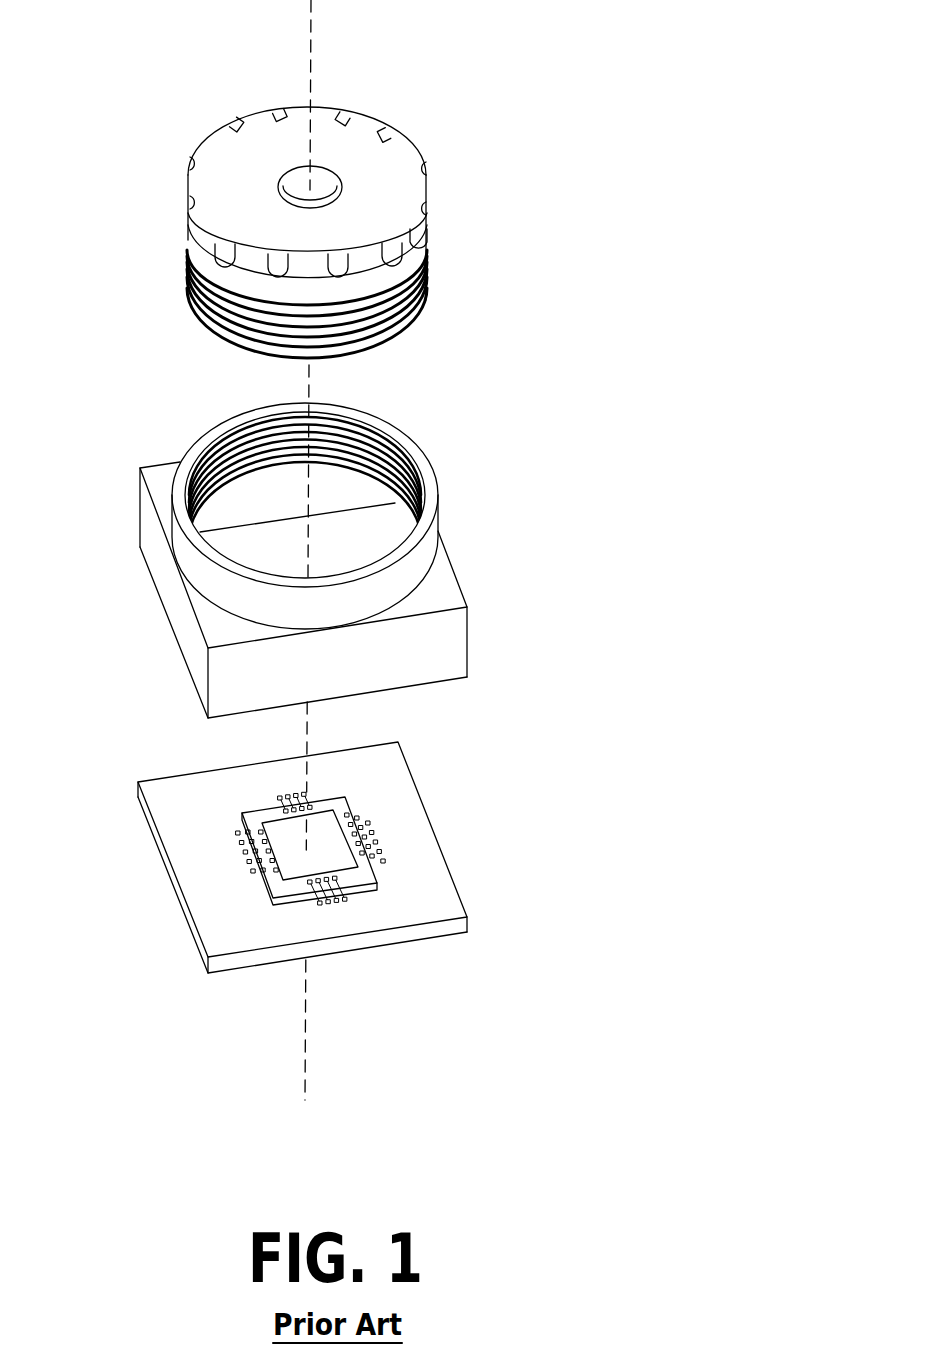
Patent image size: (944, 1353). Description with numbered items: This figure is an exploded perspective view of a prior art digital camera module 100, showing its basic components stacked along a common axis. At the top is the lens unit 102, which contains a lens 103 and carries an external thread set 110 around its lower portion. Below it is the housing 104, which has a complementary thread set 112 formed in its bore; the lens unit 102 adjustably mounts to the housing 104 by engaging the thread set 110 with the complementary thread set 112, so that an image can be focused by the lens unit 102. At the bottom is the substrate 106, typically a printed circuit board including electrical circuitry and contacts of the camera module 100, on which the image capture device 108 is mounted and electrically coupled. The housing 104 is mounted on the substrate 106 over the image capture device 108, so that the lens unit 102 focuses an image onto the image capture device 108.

The digital camera module 100 is at (672, 242).
The lens unit 102 is at (390, 183).
The lens 103 is at (323, 190).
The housing 104 is at (450, 595).
The substrate 106 is at (372, 780).
The image capture device 108 is at (368, 883).
The thread set 110 is at (418, 320).
The complementary thread set 112 is at (410, 471).